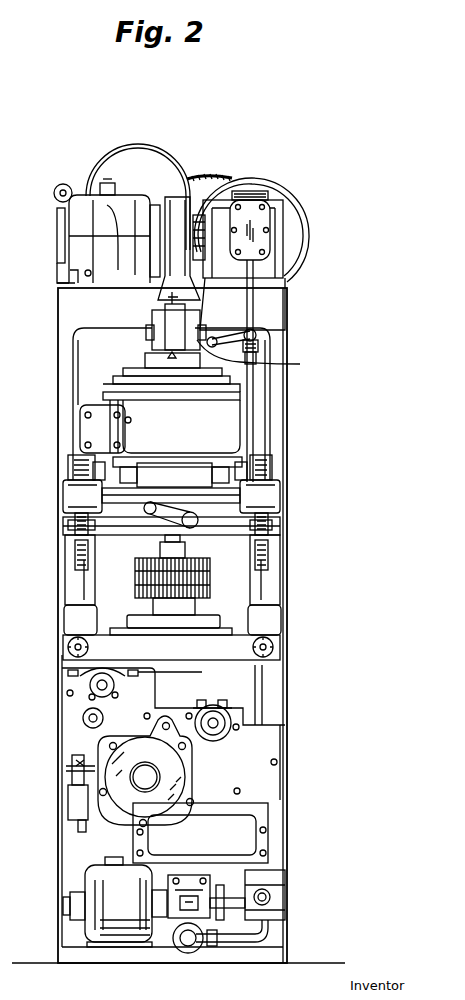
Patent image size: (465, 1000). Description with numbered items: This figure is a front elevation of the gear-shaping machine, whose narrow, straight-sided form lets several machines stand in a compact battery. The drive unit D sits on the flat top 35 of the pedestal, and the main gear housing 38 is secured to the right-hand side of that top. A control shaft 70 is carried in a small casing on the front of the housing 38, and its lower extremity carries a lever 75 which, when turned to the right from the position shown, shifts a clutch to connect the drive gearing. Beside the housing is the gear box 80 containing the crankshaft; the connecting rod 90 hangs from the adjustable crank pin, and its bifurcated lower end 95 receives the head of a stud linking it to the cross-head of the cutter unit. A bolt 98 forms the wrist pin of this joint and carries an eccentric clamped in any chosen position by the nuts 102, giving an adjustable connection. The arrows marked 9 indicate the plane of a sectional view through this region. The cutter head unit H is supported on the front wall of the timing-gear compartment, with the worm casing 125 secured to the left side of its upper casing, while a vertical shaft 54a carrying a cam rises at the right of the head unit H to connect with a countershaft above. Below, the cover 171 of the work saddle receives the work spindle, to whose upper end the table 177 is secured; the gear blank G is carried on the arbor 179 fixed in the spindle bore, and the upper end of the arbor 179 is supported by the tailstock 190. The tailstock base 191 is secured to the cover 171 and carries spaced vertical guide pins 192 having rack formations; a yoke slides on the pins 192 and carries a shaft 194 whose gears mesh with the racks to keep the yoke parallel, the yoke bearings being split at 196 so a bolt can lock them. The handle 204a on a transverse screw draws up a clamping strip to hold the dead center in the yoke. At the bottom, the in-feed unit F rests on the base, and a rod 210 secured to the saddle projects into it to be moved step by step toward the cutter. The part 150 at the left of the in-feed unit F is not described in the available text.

The section line 9- 9 is at (172, 142).
The gear box 80 is at (70, 245).
The flat top of the pedestal 35 is at (66, 284).
The connecting rod 90 is at (187, 178).
The bifurcated lower end of connecting rod 95 is at (160, 320).
The bolt 98 is at (146, 333).
The drive unit D is at (310, 199).
The main gear housing 38 is at (275, 265).
The control shaft 70 is at (258, 298).
The vertical shaft 54a is at (254, 442).
The lever 75 is at (262, 338).
The nuts 102 is at (262, 357).
The cutter head unit H is at (228, 416).
The worm casing 125 is at (78, 433).
The handle 204a is at (200, 498).
The tailstock 190 is at (300, 491).
The shaft 194 is at (240, 516).
The split 196 is at (68, 534).
The vertical guide pins 192 is at (78, 597).
The gear blank G is at (212, 588).
The arbor 179 is at (196, 614).
The table 177 is at (232, 630).
The base of tailstock 191 is at (280, 626).
The cover 171 is at (278, 652).
The in-feed unit F is at (268, 748).
The limit switch 150 is at (92, 683).
The rod 210 is at (222, 720).